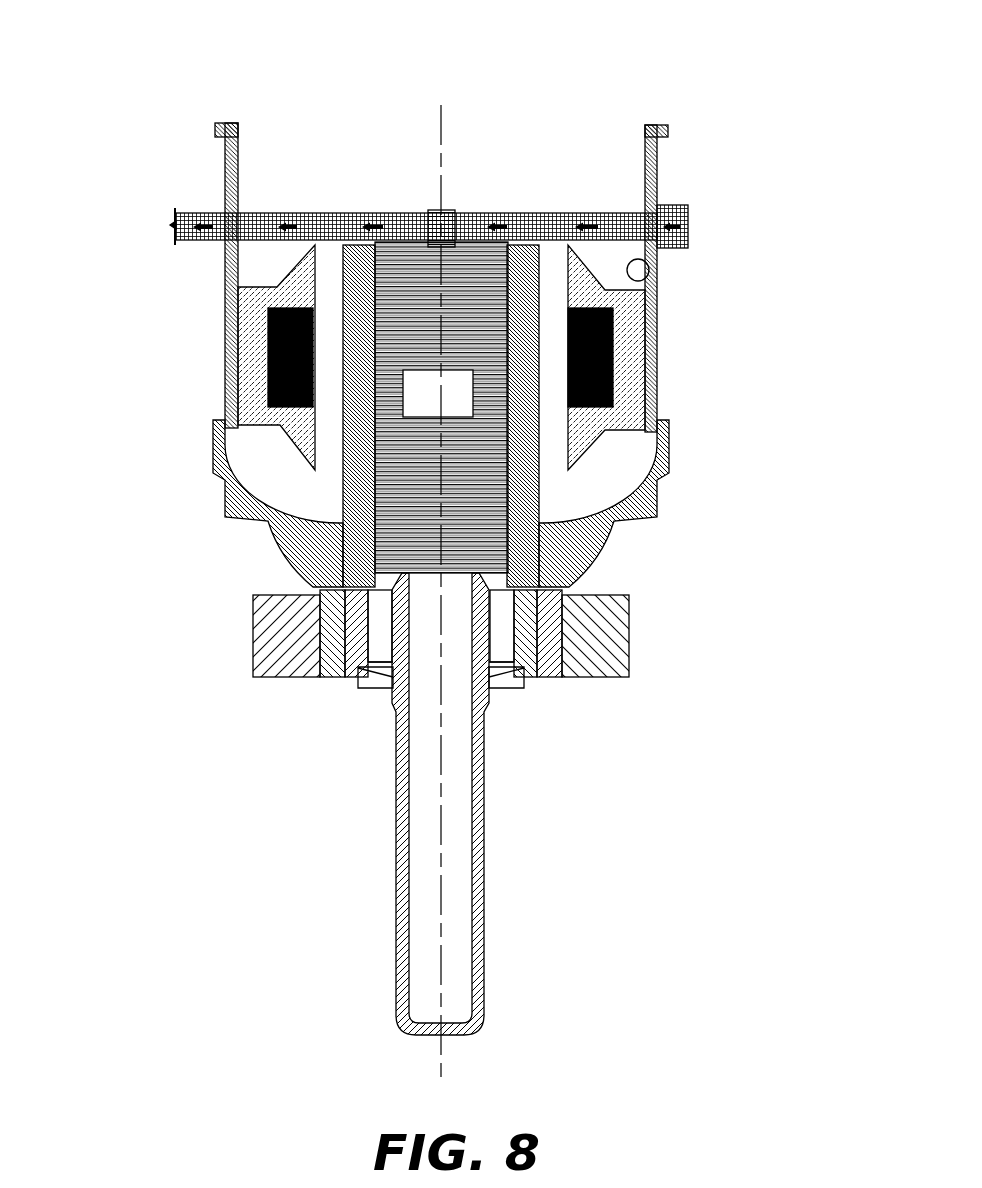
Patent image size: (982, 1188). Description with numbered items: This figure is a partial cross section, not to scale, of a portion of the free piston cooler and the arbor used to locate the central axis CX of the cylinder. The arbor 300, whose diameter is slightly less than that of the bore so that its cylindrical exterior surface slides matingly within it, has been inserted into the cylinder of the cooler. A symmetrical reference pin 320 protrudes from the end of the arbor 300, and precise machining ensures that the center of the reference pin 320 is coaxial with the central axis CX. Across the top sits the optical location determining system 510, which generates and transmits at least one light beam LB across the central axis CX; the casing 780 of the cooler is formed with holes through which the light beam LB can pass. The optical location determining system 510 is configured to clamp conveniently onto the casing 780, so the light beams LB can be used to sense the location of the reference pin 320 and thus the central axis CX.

The arbor 300 is at (468, 411).
The reference pin 320 is at (450, 210).
The optical location determining system 510 is at (694, 228).
The casing 780 is at (649, 270).
The central axis CX is at (440, 128).
The light beam LB is at (205, 213).